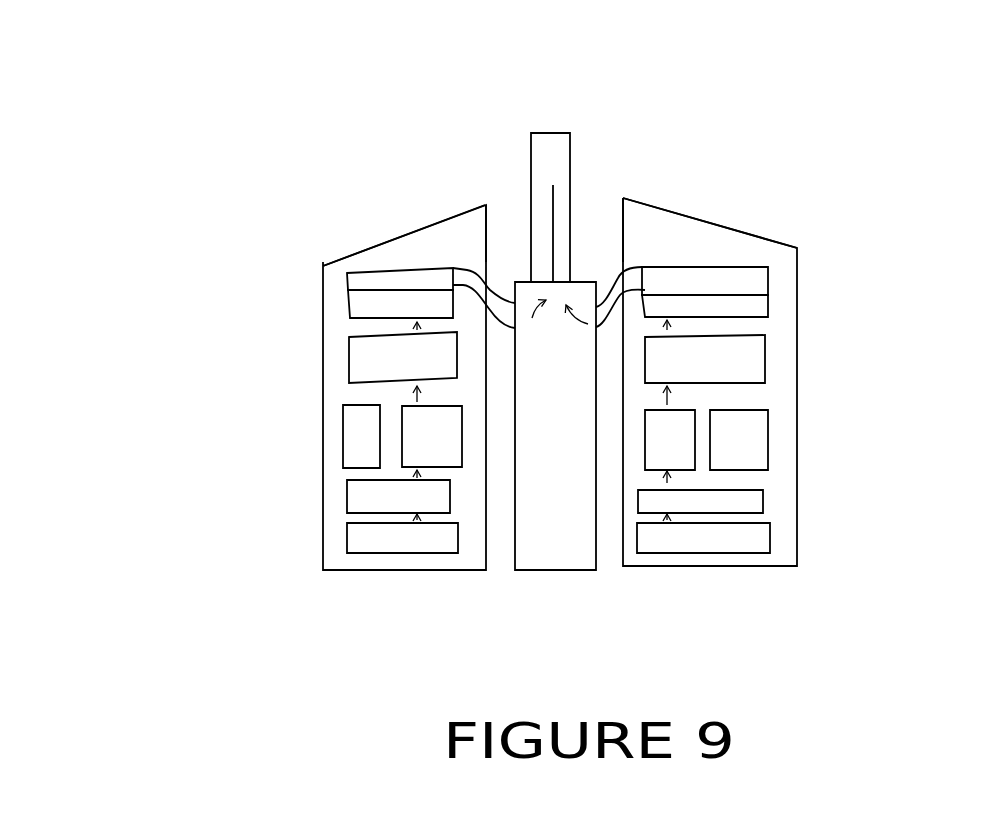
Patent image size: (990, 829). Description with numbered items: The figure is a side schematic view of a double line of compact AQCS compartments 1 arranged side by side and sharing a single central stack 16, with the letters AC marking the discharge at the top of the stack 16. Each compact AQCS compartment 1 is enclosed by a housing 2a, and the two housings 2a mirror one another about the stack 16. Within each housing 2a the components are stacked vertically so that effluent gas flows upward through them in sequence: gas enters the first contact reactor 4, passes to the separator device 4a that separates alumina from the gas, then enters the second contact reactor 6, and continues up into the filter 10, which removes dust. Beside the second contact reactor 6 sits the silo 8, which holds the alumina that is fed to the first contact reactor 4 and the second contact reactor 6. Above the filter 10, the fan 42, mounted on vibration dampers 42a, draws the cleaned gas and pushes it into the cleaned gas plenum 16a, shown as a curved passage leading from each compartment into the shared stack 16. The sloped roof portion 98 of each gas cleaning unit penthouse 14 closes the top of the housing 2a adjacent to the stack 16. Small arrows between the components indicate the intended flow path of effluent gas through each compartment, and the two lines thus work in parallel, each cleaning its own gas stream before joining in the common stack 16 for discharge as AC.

The compact AQCS compartment 1 is at (989, 345).
The housing 2a is at (323, 568).
The first contact reactor 4 is at (348, 541).
The separator device 4a is at (350, 500).
The second contact reactor 6 is at (402, 408).
The silo 8 is at (347, 443).
The filter 10 is at (349, 357).
The gas cleaning unit penthouse 14 is at (357, 250).
The stack 16 is at (572, 183).
The cleaned gas plenum 16a is at (506, 294).
The fan 42 is at (347, 272).
The vibration dampers 42a is at (350, 312).
The sloped hood panel 98 is at (433, 222).
The air current outlet AC is at (547, 127).